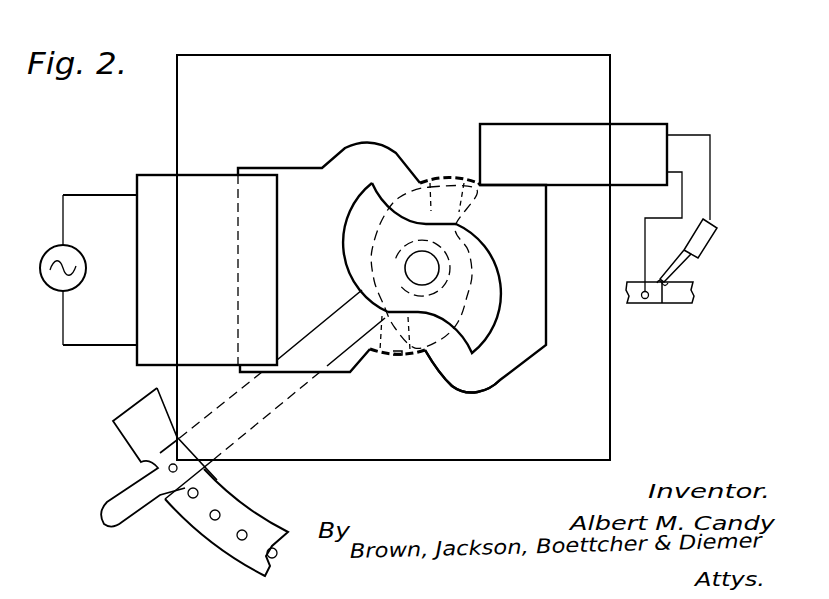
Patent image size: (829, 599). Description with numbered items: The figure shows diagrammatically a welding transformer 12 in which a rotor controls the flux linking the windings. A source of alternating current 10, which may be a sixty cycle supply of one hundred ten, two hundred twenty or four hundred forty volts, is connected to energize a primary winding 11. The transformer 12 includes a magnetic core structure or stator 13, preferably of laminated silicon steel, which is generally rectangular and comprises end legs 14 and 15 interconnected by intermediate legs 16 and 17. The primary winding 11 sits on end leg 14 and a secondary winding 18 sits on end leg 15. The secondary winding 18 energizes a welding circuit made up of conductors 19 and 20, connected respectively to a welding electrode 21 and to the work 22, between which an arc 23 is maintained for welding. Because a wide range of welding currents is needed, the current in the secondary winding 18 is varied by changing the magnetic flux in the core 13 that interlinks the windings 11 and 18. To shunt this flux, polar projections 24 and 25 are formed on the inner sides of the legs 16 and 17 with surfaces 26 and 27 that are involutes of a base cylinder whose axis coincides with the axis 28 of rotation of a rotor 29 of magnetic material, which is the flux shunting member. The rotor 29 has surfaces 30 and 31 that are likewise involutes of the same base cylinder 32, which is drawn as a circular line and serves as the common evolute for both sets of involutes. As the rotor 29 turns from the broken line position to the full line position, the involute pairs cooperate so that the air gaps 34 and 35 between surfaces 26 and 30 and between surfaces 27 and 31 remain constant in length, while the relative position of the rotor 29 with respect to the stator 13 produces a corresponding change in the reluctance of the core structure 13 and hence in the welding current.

The source of alternating current 10 is at (55, 257).
The primary winding 11 is at (151, 173).
The transformer 12 is at (229, 45).
The magnetic core structure or stator 13 is at (295, 48).
The end leg 14 is at (187, 382).
The end leg 15 is at (600, 349).
The intermediate leg 16 is at (408, 67).
The intermediate leg 17 is at (374, 458).
The secondary winding 18 is at (649, 132).
The conductor 19 is at (695, 137).
The conductor 20 is at (682, 200).
The welding electrode 21 is at (683, 266).
The work 22 is at (657, 304).
The arc 23 is at (661, 279).
The polar projection 24 is at (418, 160).
The polar projection 25 is at (418, 366).
The involute surface 26 is at (453, 174).
The involute surface 27 is at (398, 354).
The axis of rotation 28 is at (422, 268).
The rotor 29 is at (378, 247).
The involute surface 30 is at (493, 326).
The involute surface 31 is at (360, 213).
The base cylinder 32 is at (437, 277).
The air gap 34 is at (447, 197).
The air gap 35 is at (395, 333).